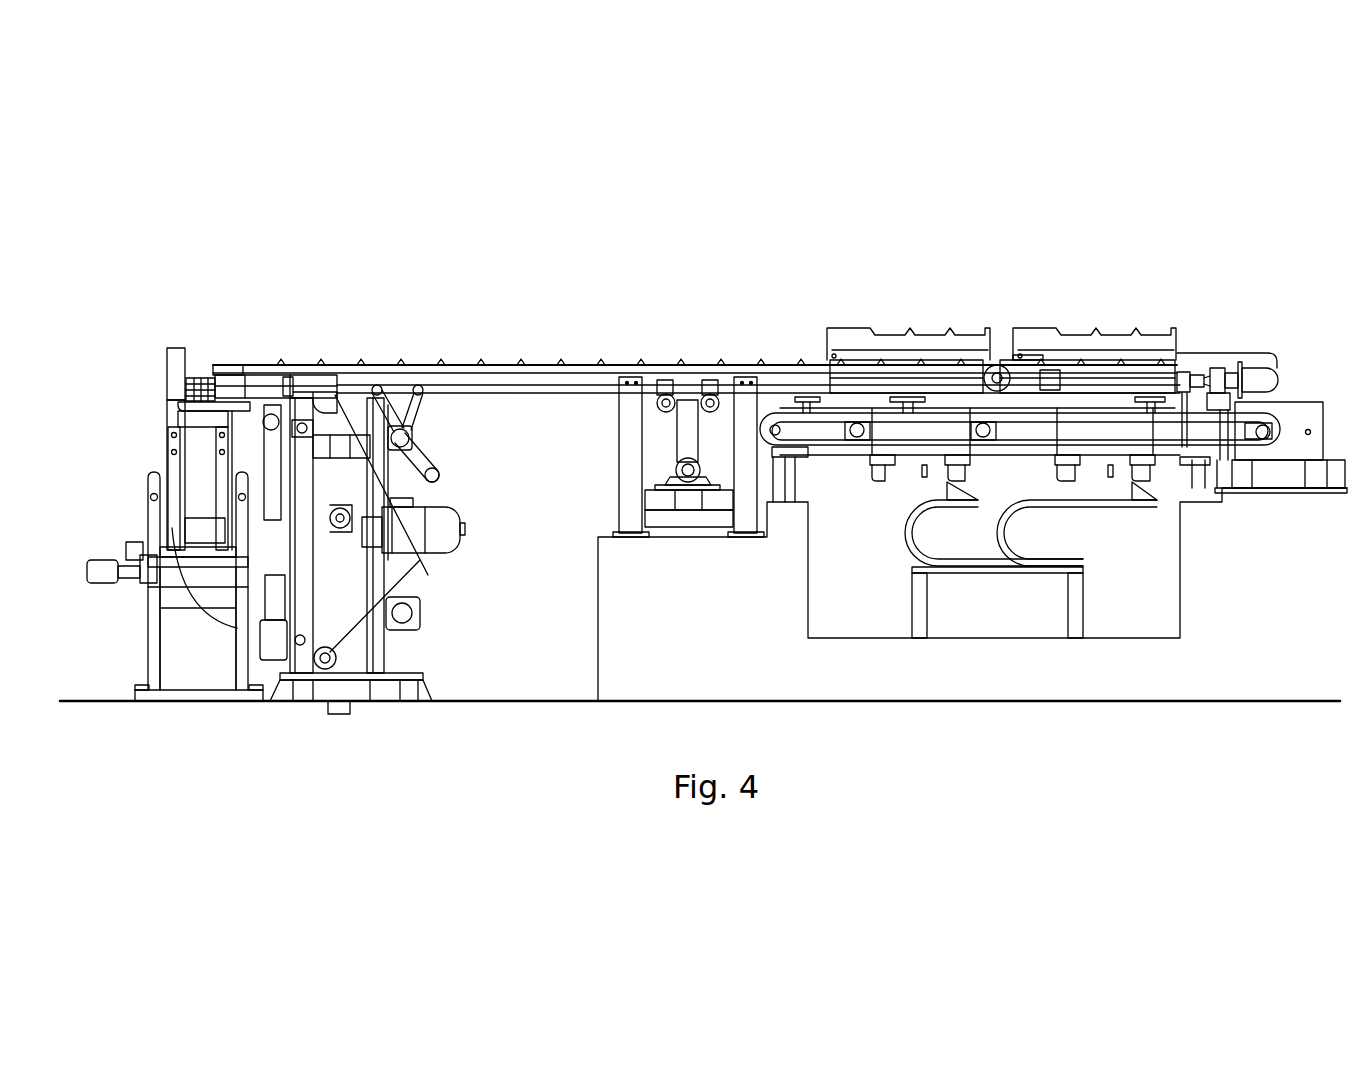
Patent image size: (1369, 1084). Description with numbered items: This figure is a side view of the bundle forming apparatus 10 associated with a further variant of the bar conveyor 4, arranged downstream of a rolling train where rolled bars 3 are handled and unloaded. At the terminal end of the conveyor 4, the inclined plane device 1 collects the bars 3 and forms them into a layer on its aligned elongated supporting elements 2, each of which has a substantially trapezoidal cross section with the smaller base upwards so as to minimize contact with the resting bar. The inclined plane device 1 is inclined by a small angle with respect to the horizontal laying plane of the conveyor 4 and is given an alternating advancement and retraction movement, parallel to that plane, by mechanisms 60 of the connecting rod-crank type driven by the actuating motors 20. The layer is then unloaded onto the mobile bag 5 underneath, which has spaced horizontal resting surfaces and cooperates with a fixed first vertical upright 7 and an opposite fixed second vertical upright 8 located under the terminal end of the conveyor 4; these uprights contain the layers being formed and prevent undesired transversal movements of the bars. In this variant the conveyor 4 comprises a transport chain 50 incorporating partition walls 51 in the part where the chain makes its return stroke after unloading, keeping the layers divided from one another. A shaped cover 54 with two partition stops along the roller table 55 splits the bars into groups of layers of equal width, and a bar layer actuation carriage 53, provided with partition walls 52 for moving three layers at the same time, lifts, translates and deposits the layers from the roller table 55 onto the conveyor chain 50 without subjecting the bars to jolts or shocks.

The inclined plane device 1 is at (212, 362).
The elongated supporting element 2 is at (200, 378).
The rolled bars 3 is at (336, 368).
The bar conveyor 4 is at (452, 362).
The mobile bag 5 is at (195, 408).
The first vertical upright 7 is at (178, 395).
The second vertical upright 8 is at (230, 455).
The bundle forming apparatus 10 is at (161, 343).
The actuating motors 20 is at (420, 560).
The transport chain 50 is at (603, 365).
The partition walls 51 is at (398, 365).
The partition walls 52 is at (915, 335).
The bar layer actuation carriage 53 is at (843, 335).
The shaped cover 54 is at (1272, 358).
The roller table 55 is at (1183, 365).
The mechanisms 60 is at (425, 447).